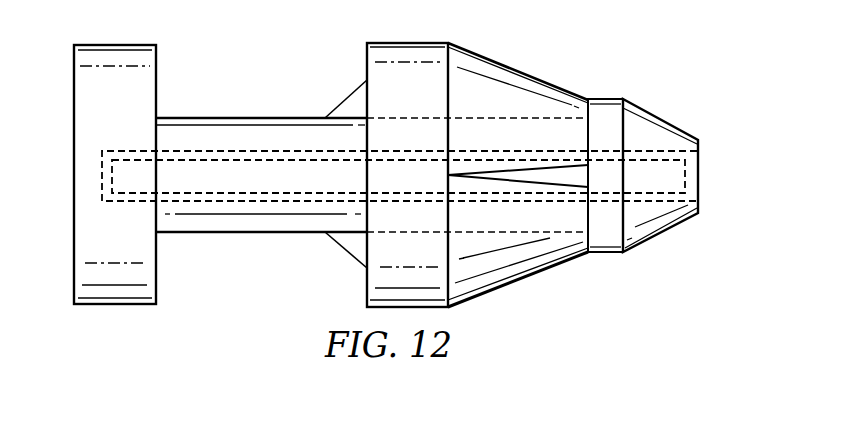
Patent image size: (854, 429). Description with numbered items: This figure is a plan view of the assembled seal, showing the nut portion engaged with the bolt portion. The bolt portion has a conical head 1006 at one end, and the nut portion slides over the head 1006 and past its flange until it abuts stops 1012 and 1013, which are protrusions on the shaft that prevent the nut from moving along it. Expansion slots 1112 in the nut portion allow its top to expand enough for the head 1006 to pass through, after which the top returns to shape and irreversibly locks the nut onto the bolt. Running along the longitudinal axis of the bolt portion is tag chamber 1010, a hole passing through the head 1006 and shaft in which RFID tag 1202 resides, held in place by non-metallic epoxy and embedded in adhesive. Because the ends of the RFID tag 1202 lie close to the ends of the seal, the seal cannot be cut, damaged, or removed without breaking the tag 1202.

The head 1006 is at (672, 124).
The tag chamber 1010 is at (257, 150).
The stop 1012 is at (353, 256).
The stop 1013 is at (352, 93).
The expansion slot 1112 is at (543, 173).
The RFID tag 1202 is at (220, 194).